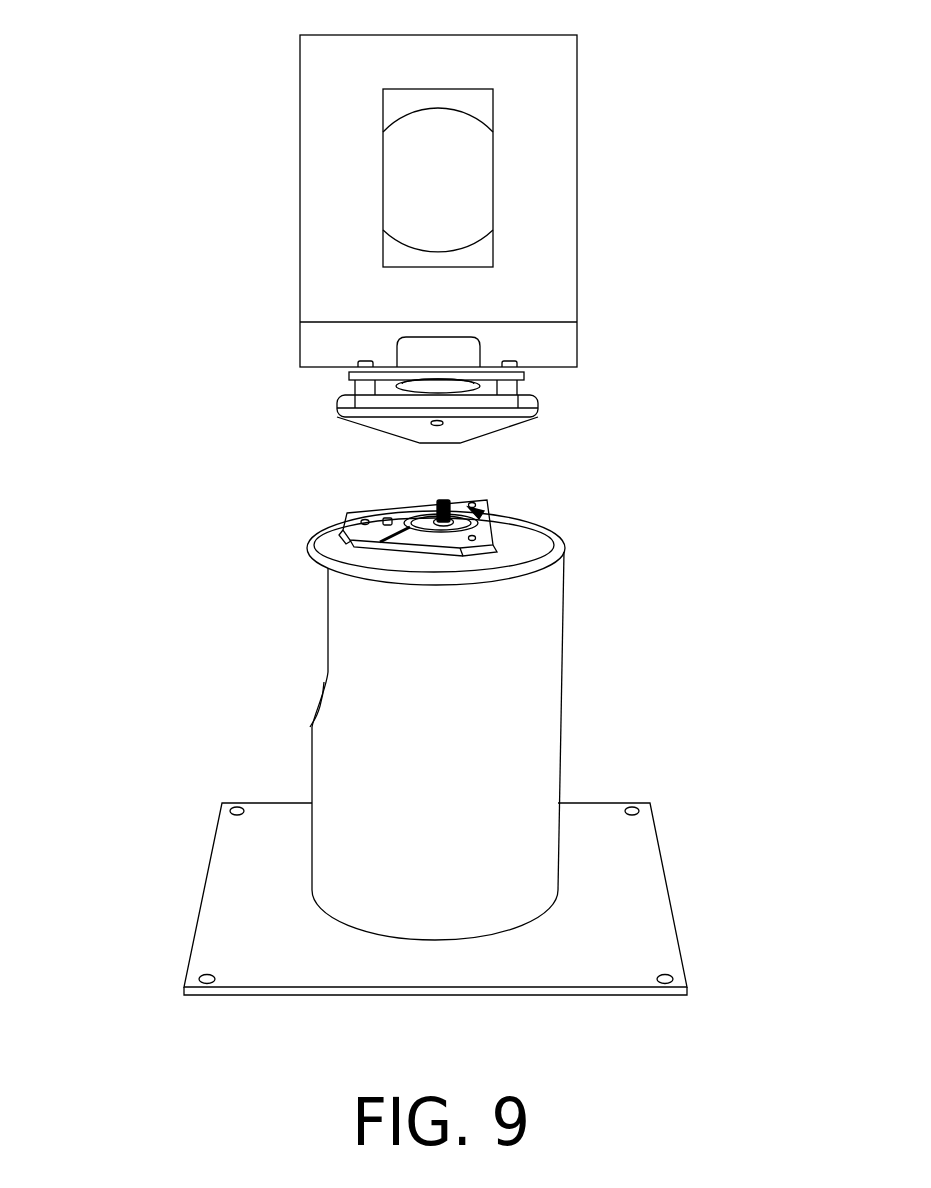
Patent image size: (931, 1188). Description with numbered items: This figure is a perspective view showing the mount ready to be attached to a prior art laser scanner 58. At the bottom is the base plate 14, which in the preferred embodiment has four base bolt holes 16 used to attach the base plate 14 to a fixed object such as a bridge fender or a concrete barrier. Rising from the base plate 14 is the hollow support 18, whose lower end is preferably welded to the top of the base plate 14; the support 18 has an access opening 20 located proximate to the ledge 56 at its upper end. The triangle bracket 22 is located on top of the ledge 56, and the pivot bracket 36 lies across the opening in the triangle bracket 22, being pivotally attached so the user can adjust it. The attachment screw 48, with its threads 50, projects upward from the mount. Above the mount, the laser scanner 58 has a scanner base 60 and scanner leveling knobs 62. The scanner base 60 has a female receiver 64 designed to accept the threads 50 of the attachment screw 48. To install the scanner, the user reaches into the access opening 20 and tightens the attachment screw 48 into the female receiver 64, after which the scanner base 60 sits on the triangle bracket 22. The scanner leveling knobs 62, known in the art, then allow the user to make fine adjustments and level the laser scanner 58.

The laser scanner 58 is at (622, 187).
The scanner base 60 is at (345, 410).
The scanner leveling knobs 62 is at (512, 390).
The female receiver 64 is at (445, 425).
The support 18 is at (500, 690).
The access opening 20 is at (320, 652).
The triangle bracket 22 is at (347, 515).
The ledge 56 is at (330, 540).
The threads 50 is at (438, 510).
The attachment screw 48 is at (483, 514).
The pivot bracket 36 is at (380, 542).
The base plate 14 is at (250, 912).
The base bolt holes 16 is at (665, 975).